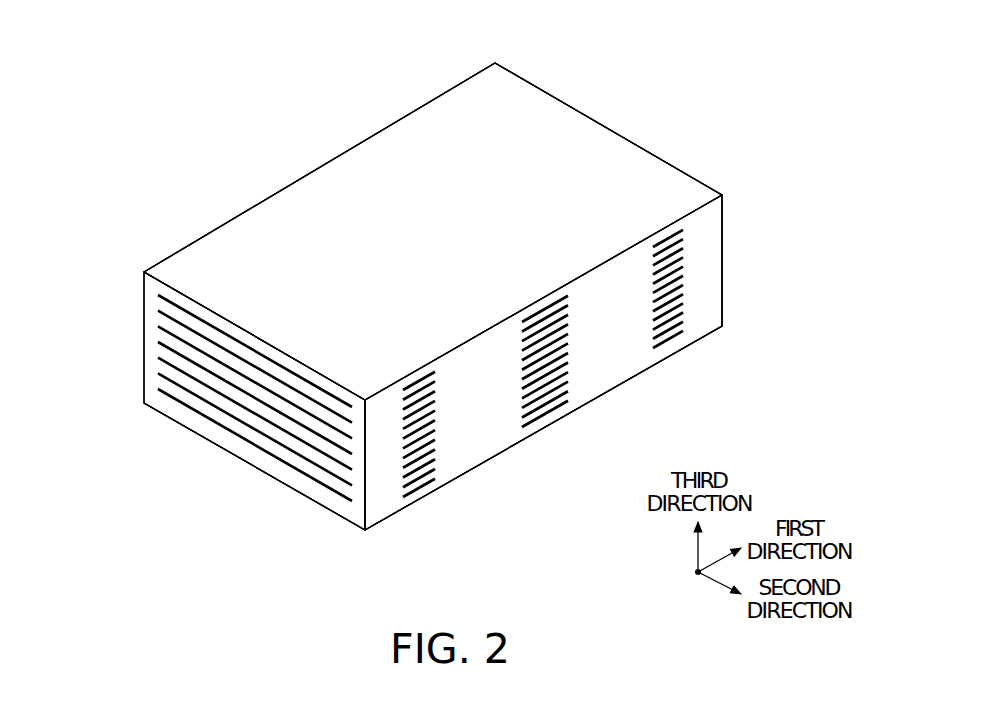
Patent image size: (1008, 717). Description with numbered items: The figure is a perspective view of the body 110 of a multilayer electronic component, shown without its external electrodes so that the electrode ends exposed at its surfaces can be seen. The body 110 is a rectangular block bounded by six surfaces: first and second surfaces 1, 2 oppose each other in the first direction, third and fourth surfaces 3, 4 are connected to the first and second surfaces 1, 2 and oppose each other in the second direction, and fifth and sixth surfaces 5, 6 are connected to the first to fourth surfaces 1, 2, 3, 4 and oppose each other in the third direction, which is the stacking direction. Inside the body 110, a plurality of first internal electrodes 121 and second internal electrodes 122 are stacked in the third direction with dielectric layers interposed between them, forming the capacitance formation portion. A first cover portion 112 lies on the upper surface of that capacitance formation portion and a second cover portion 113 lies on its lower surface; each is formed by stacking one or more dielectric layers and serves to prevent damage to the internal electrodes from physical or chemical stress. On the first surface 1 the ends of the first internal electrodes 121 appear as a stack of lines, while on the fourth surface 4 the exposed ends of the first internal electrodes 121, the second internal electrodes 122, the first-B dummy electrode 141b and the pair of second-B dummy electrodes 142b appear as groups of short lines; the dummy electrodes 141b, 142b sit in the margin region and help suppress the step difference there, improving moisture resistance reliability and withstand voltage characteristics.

The body 110 is at (212, 28).
The first surface 1 is at (248, 464).
The second surface 2 is at (584, 113).
The third surface 3 is at (254, 205).
The fourth surface 4 is at (703, 304).
The fifth surface 5 is at (388, 156).
The sixth surface 6 is at (486, 464).
The first cover portion 112 is at (144, 278).
The second cover portion 113 is at (144, 403).
The first internal electrode 121 is at (158, 298).
The second internal electrode 122 is at (563, 403).
The first-B dummy electrode 141b is at (535, 425).
The second-B dummy electrode 142b is at (433, 476).